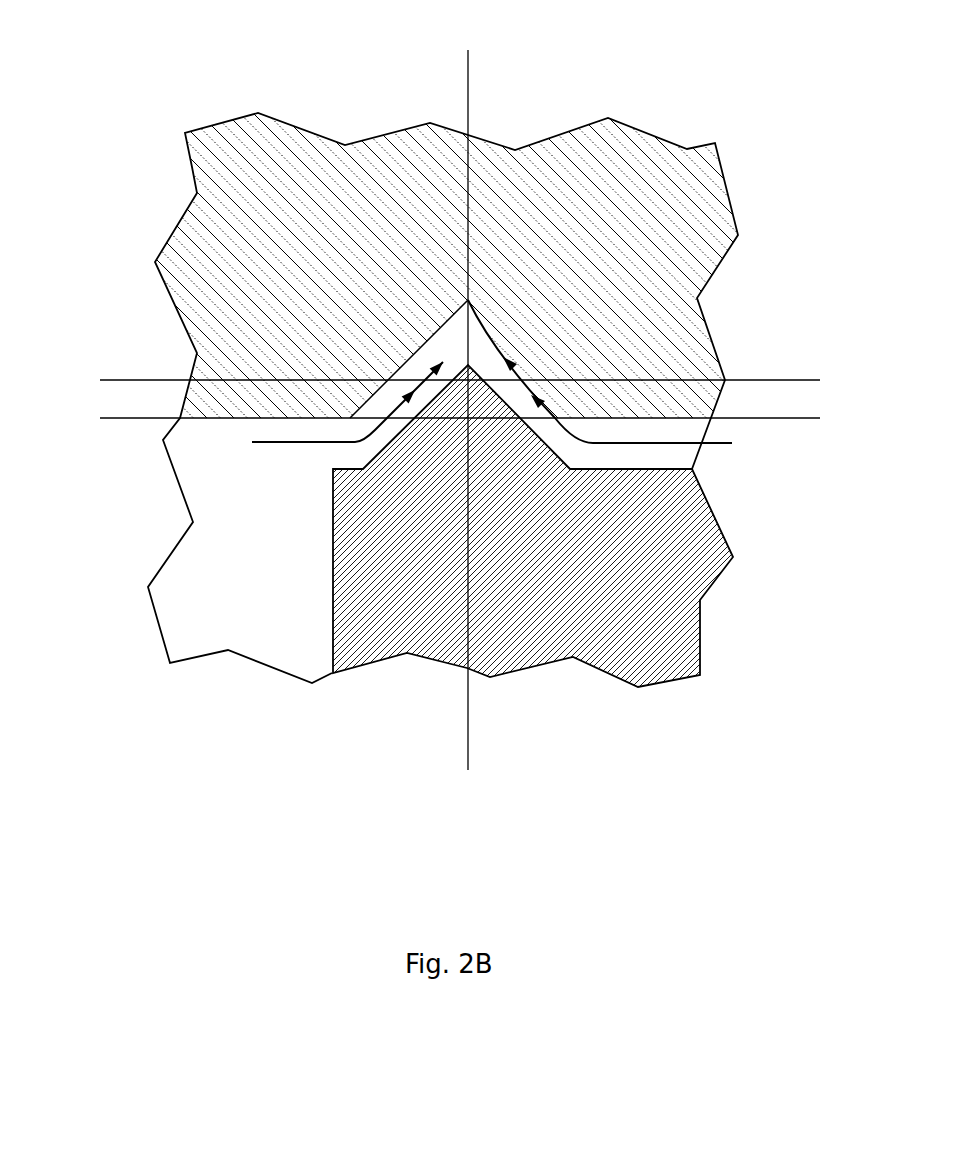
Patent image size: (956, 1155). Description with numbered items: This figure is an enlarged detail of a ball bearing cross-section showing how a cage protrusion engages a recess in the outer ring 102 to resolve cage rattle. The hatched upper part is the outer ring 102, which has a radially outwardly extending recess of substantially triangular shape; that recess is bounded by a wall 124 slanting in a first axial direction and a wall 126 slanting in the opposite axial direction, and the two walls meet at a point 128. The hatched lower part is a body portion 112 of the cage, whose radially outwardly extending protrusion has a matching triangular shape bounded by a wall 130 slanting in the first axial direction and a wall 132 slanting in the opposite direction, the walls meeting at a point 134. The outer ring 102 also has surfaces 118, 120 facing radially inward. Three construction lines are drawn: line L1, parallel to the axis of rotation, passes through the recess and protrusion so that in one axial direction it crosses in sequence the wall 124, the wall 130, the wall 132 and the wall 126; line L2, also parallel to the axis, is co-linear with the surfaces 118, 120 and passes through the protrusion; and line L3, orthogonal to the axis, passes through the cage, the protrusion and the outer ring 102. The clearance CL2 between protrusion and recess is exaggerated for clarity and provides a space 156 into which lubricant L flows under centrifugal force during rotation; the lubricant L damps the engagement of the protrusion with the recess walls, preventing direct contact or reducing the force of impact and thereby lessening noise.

The outer ring 102 is at (667, 138).
The body portion 112 is at (330, 552).
The surface 118 is at (197, 418).
The surface 120 is at (660, 418).
The wall 124 is at (440, 327).
The wall 126 is at (493, 333).
The point 128 is at (466, 300).
The wall 130 is at (415, 367).
The wall 132 is at (545, 437).
The point 134 is at (470, 310).
The space 156 is at (507, 348).
The line L1 is at (128, 381).
The line L2 is at (128, 419).
The line L3 is at (466, 92).
The clearance CL2 is at (365, 398).
The lubricant L is at (273, 443).